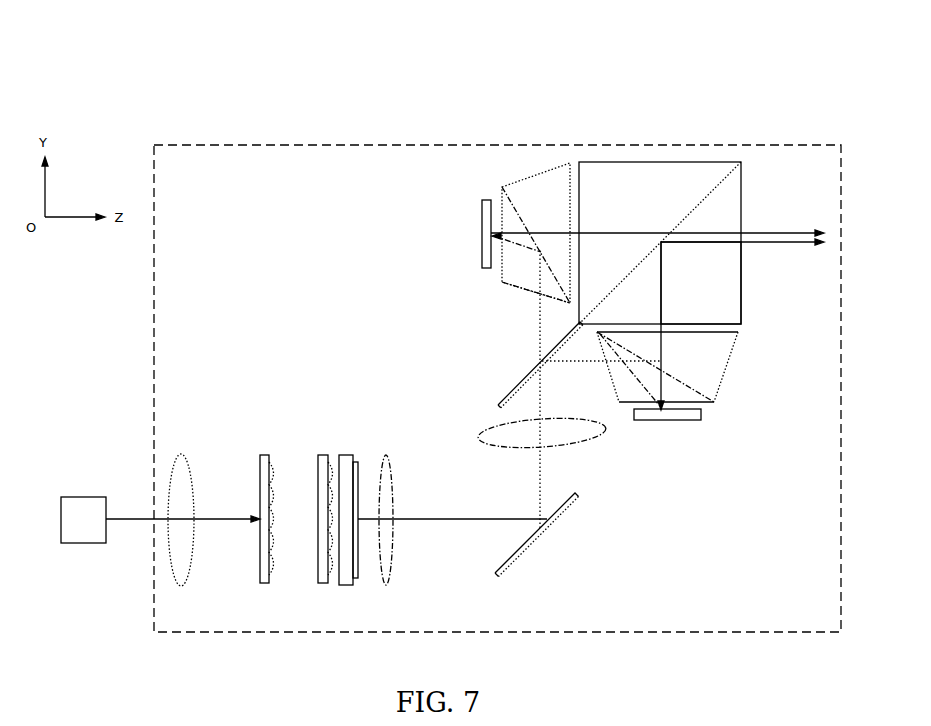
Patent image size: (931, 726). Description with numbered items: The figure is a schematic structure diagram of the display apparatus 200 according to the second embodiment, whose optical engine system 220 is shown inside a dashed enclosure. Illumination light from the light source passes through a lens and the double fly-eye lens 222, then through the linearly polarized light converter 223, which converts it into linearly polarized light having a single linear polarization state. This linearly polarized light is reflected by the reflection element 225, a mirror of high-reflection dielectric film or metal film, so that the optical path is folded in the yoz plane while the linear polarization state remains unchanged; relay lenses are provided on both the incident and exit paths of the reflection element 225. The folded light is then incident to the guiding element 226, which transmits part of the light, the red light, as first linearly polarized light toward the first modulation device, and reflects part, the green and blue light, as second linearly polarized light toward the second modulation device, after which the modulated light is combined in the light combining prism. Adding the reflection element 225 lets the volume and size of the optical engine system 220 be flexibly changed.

The display apparatus 200 is at (467, 111).
The optical engine system 220 is at (152, 364).
The double fly-eye lens 222 is at (260, 585).
The linearly polarized light converter 223 is at (348, 453).
The reflection element 225 is at (538, 537).
The guiding element 226 is at (514, 380).